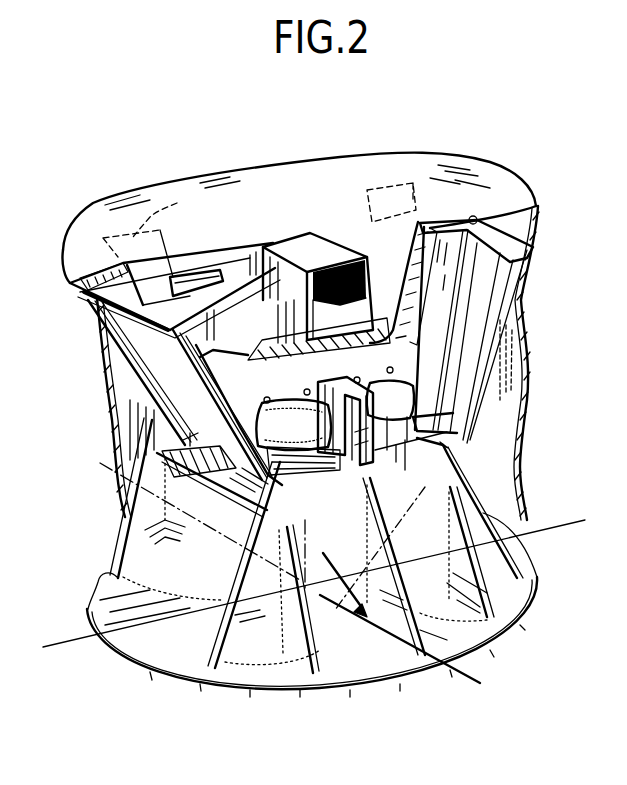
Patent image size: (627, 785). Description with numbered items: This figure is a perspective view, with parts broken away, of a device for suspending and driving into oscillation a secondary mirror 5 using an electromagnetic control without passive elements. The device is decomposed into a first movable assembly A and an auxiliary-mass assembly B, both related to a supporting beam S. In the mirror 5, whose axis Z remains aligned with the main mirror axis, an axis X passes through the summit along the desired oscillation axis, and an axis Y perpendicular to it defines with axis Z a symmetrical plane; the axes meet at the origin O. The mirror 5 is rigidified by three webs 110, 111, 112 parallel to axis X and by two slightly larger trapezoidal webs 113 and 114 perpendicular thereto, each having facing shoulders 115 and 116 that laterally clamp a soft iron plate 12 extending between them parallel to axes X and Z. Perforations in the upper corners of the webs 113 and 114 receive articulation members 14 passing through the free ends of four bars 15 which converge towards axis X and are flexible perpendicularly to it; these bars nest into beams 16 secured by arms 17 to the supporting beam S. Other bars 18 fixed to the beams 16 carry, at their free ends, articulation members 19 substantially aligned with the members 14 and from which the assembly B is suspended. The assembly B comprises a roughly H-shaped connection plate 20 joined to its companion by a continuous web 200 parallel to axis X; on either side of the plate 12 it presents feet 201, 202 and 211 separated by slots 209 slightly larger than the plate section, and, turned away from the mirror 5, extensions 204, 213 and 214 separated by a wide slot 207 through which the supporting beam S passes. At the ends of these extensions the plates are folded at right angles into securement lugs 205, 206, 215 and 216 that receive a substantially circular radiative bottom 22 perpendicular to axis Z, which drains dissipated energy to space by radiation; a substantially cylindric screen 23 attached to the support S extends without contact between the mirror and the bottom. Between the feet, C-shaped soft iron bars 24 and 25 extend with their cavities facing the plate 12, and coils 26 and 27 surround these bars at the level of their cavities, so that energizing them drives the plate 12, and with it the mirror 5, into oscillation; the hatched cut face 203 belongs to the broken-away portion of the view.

The secondary mirror 5 is at (98, 597).
The plate 12 is at (377, 450).
The articulation members 14 is at (260, 533).
The bars 15 is at (153, 366).
The beams 16 is at (74, 296).
The arms 17 is at (110, 277).
The bars 18 is at (183, 380).
The articulation members 19 is at (184, 472).
The connection plate 20 is at (327, 357).
The radiative bottom 22 is at (493, 180).
The screen 23 is at (532, 222).
The C-shaped bar 24 is at (297, 470).
The C-shaped bar 25 is at (443, 440).
The coil 26 is at (298, 437).
The coil 27 is at (407, 415).
The web 110 is at (330, 668).
The web 111 is at (432, 598).
The web 112 is at (505, 566).
The web 113 is at (120, 547).
The web 114 is at (227, 633).
The shoulder 115 is at (353, 455).
The shoulder 116 is at (446, 440).
The continuous web 200 is at (418, 222).
The foot 201 is at (240, 465).
The foot 202 is at (453, 426).
The hatched band 203 is at (253, 377).
The extension 204 is at (438, 303).
The securement lug 205 is at (208, 278).
The securement lug 206 is at (480, 221).
The slot 207 is at (385, 334).
The slot 209 is at (304, 382).
The foot 211 is at (186, 452).
The extension 213 is at (172, 275).
The extension 214 is at (372, 224).
The securement lug 215 is at (176, 209).
The securement lug 216 is at (370, 181).
The first movable assembly A is at (113, 522).
The assembly B is at (84, 209).
The supporting beam S is at (320, 263).
The origin O is at (314, 573).
The axis X is at (493, 690).
The axis Y is at (589, 520).
The axis Z is at (307, 523).